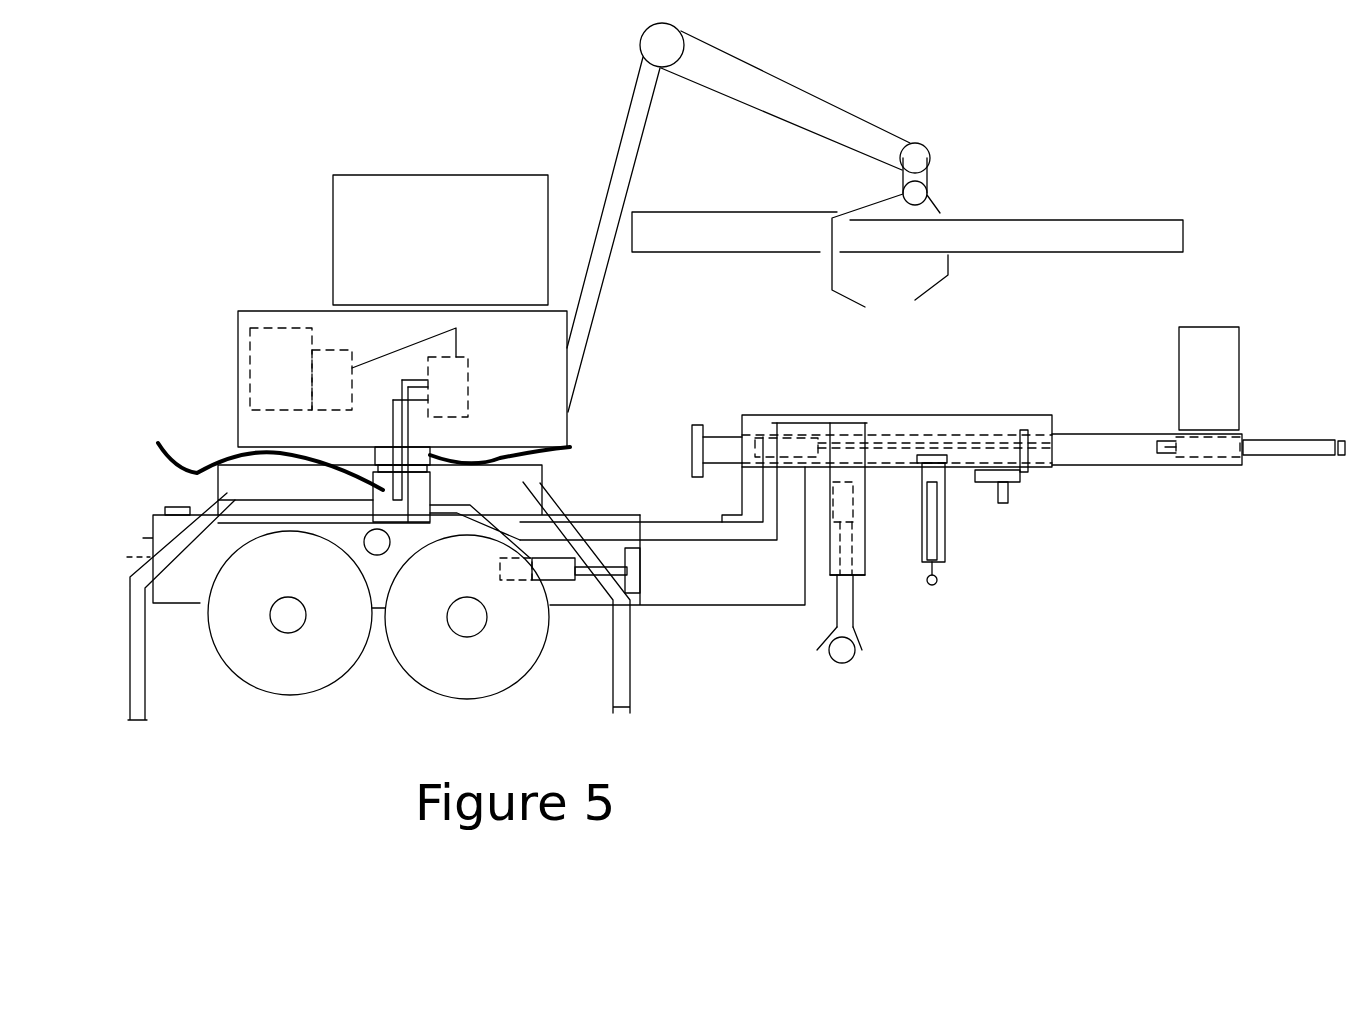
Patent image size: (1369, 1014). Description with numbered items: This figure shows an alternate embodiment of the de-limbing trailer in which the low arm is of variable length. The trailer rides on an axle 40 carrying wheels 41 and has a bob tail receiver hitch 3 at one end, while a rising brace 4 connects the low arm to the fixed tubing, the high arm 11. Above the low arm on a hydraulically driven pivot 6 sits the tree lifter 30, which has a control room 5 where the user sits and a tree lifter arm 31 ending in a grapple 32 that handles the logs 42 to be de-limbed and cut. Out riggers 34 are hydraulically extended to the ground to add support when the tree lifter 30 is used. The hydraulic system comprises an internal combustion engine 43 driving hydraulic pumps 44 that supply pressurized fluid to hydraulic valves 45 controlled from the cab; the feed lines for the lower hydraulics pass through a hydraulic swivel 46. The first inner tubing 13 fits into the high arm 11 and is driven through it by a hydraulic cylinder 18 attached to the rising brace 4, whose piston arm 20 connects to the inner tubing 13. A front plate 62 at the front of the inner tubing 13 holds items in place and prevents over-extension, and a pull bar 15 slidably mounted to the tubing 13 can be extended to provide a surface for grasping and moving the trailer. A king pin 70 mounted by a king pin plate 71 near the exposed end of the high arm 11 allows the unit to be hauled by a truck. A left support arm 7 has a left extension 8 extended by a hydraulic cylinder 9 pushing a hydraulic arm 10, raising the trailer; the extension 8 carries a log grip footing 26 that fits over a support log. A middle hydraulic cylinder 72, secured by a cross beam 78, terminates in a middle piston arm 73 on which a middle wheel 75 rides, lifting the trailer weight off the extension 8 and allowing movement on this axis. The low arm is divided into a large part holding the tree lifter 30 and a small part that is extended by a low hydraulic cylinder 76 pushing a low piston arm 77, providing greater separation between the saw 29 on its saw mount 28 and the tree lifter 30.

The bob tail receiver hitch 3 is at (151, 541).
The rising brace 4 is at (734, 425).
The control room 5 is at (440, 240).
The hydraulically driven pivot 6 is at (512, 445).
The left support arm 7 is at (873, 538).
The left extension 8 is at (864, 600).
The hydraulic cylinder 9 is at (868, 499).
The hydraulic arm 10 is at (876, 554).
The first high arm 11 is at (897, 413).
The first inner tubing 13 is at (1147, 424).
The pull bar 15 is at (1296, 470).
The hydraulic cylinder 18 is at (793, 410).
The piston arm 20 is at (935, 406).
The log grip footing 26 is at (723, 533).
The saw mount 28 is at (1239, 418).
The saw 29 is at (938, 416).
The tree lifter 30 is at (402, 379).
The tree lifter arm 31 is at (748, 217).
The grapple 32 is at (926, 232).
The out riggers 34 is at (419, 602).
The axle 40 is at (294, 613).
The wheels 41 is at (290, 613).
The logs 42 is at (907, 234).
The internal combustion engine 43 is at (281, 369).
The hydraulic pumps 44 is at (607, 528).
The hydraulic valves 45 is at (431, 439).
The hydraulic swivel 46 is at (246, 455).
The front plate 62 is at (660, 439).
The king pin 70 is at (1040, 512).
The king pin plate 71 is at (1038, 489).
The middle hydraulic cylinder 72 is at (972, 521).
The middle piston arm 73 is at (959, 508).
The middle wheel 75 is at (972, 579).
The low hydraulic cylinder 76 is at (558, 608).
The low piston arm 77 is at (623, 531).
The cross beam 78 is at (991, 418).